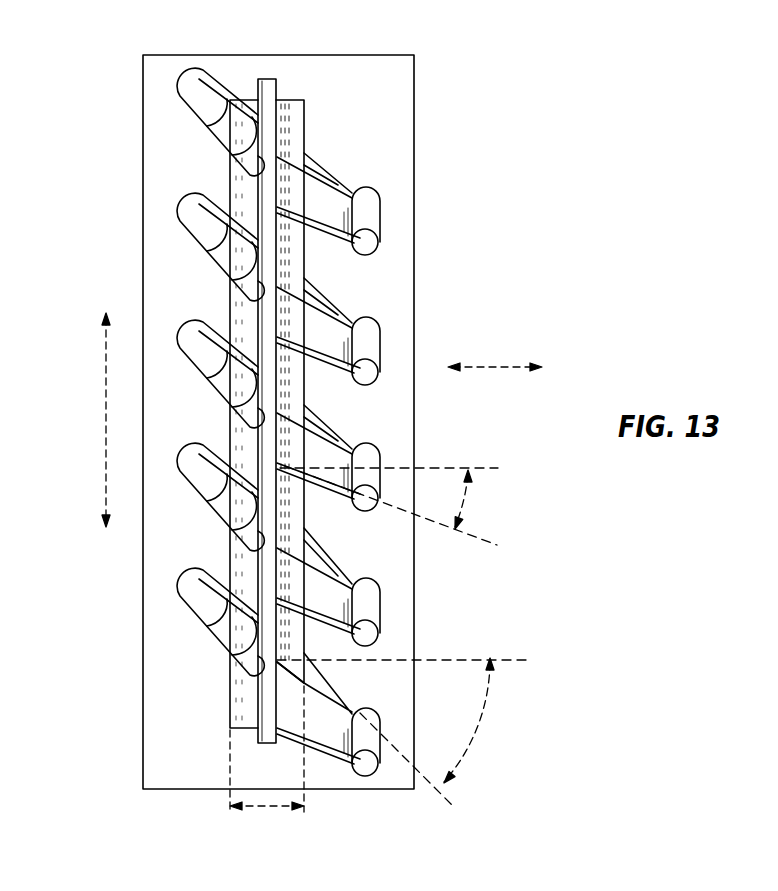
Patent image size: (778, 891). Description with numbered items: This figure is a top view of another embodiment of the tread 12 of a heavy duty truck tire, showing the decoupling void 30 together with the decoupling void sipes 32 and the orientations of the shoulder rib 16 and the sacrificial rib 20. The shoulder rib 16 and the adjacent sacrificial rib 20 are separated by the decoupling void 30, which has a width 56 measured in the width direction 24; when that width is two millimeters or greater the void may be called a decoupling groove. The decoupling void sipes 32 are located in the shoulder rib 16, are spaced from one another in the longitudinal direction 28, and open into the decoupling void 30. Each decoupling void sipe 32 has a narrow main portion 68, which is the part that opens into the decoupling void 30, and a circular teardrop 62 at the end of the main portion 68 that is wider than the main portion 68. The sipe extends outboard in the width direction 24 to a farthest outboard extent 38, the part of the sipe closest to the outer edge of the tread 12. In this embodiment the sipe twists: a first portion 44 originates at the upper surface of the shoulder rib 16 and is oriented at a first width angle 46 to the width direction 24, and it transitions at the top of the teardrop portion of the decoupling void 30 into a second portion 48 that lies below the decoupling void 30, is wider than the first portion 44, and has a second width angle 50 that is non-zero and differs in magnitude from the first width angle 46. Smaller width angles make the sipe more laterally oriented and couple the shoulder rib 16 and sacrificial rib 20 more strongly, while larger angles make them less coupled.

The tread 12 is at (105, 42).
The sacrificial rib 20 is at (153, 153).
The decoupling void 30 is at (267, 82).
The shoulder rib 16 is at (400, 305).
The main portion 68 is at (328, 205).
The teardrop 62 is at (376, 244).
The decoupling void sipe 32 is at (369, 381).
The second portion 48 is at (325, 428).
The first portion 44 is at (327, 493).
The farthest outboard extent 38 is at (186, 592).
The longitudinal direction 28 is at (105, 430).
The width direction 24 is at (495, 368).
The first width angle 46 is at (465, 497).
The second width angle 50 is at (484, 717).
The width 56 is at (270, 810).